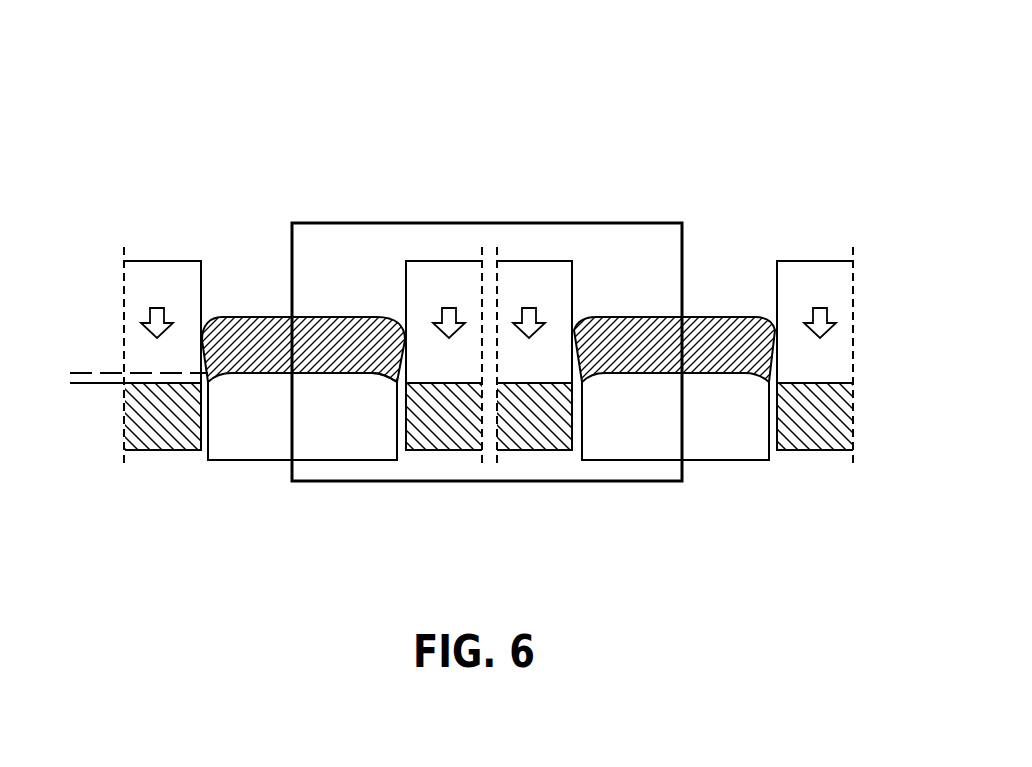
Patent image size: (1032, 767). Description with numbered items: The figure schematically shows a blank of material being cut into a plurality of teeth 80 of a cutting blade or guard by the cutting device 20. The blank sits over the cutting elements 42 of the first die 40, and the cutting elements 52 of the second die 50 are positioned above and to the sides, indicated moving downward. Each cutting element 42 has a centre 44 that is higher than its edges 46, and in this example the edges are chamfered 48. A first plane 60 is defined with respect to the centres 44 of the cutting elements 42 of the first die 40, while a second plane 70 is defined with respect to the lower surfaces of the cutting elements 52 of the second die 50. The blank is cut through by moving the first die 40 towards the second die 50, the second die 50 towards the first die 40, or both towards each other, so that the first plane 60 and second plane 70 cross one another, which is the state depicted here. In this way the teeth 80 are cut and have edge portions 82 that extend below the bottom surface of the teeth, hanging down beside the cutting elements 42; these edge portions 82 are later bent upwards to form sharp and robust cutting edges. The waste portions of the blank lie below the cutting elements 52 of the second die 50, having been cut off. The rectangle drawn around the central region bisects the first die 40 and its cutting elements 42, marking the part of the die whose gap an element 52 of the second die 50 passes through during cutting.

The cutting device 20 is at (632, 115).
The first die 40 is at (499, 475).
The cutting element 42 is at (240, 440).
The centre 44 is at (333, 372).
The edges 46 is at (391, 471).
The chamfer 48 is at (380, 383).
The second die 50 is at (504, 294).
The cutting element 52 is at (147, 262).
The first plane 60 is at (72, 370).
The second plane 70 is at (98, 383).
The teeth 80 is at (238, 322).
The edge portions 82 is at (773, 328).